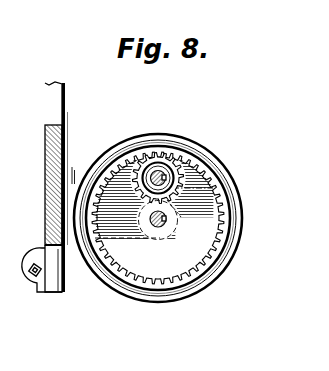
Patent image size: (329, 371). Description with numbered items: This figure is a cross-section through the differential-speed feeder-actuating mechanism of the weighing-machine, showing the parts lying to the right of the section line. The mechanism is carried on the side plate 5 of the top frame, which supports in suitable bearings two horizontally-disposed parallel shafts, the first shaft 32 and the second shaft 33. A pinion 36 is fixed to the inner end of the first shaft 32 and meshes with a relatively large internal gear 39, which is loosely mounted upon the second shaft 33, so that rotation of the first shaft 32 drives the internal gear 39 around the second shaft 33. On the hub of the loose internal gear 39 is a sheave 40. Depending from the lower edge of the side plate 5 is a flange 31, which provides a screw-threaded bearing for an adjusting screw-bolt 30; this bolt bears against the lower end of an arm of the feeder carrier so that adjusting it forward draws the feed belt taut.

The side plate 5 is at (122, 163).
The screw-bolt 30 is at (31, 274).
The flange 31 is at (45, 283).
The first shaft 32 is at (162, 180).
The second shaft 33 is at (159, 227).
The pinion 36 is at (160, 153).
The internal gear 39 is at (228, 225).
The sheave 40 is at (235, 189).